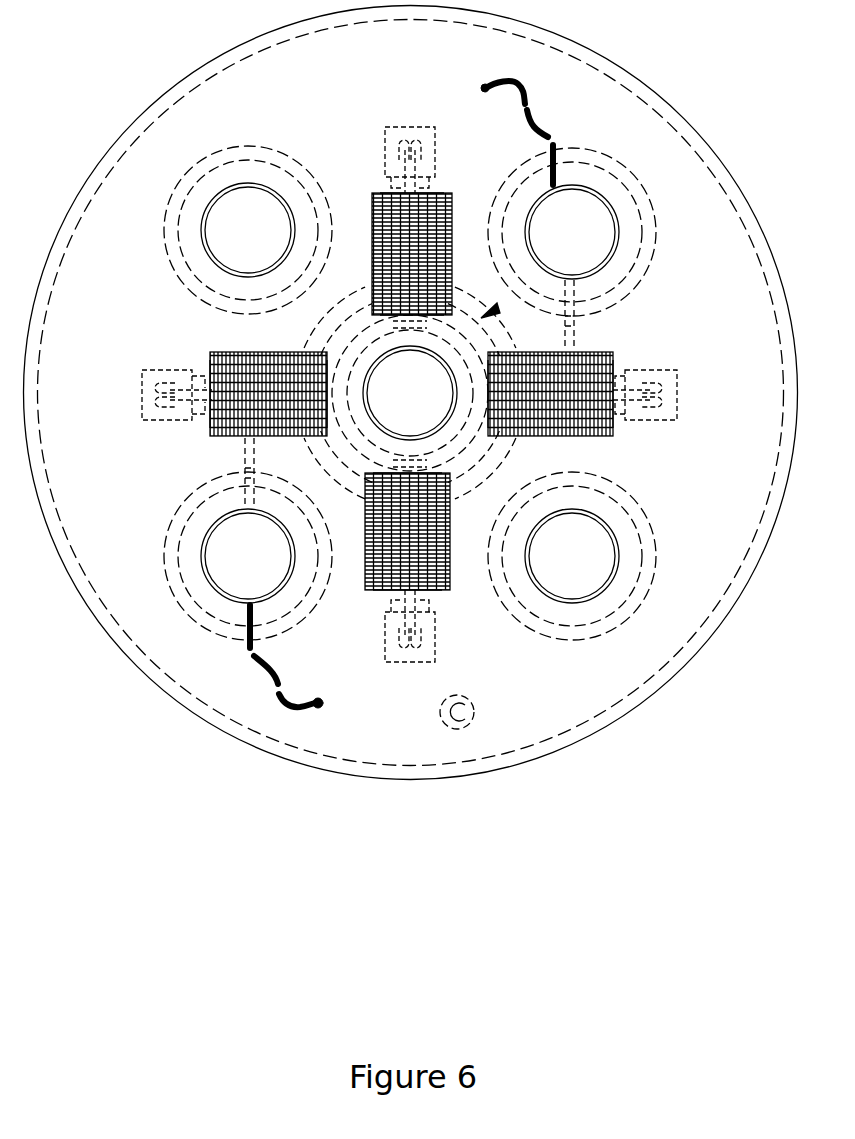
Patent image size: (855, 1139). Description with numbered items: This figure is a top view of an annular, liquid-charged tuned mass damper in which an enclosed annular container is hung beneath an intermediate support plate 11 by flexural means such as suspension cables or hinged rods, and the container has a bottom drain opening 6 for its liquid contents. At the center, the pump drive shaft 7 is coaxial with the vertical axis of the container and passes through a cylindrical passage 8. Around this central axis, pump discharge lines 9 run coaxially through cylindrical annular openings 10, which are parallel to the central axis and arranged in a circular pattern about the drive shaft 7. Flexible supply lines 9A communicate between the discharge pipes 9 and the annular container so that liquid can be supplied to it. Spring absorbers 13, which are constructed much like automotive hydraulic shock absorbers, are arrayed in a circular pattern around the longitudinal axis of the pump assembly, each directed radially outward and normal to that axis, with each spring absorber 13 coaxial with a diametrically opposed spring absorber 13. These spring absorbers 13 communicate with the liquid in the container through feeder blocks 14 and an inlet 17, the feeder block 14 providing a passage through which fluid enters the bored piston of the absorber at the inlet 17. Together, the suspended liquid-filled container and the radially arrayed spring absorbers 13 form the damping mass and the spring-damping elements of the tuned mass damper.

The bottom drain opening 6 is at (476, 710).
The pump drive shaft 7 is at (400, 409).
The cylindrical passage 8 is at (497, 305).
The pump discharge lines 9 is at (578, 244).
The flexible supply lines 9A is at (522, 128).
The cylindrical annular openings 10 is at (648, 272).
The intermediate support plate 11 is at (340, 111).
The spring absorbers 13 is at (208, 431).
The feeder blocks 14 is at (140, 406).
The inlet 17 is at (385, 637).